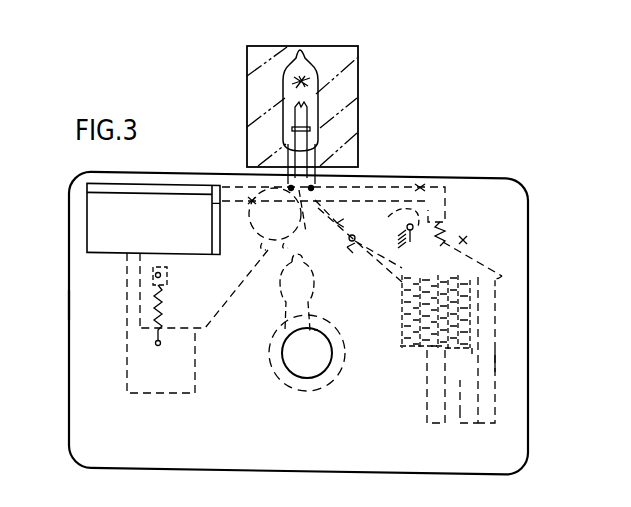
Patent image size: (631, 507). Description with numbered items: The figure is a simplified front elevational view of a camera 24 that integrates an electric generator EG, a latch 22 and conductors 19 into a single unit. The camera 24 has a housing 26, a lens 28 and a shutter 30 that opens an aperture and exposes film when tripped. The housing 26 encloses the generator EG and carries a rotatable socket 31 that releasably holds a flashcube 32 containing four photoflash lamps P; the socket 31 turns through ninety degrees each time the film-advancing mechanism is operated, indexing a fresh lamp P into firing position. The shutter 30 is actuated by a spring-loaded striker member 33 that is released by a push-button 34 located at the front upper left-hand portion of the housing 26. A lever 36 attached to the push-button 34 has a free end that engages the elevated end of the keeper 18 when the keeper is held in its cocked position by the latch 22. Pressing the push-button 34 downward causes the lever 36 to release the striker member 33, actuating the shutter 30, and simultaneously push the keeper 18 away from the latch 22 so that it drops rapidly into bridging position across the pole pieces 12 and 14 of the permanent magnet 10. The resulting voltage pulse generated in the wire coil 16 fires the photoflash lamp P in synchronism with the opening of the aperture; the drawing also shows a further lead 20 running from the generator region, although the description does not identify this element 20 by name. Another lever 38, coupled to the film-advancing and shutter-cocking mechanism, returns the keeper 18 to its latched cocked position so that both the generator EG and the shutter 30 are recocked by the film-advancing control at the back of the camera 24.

The permanent magnet 10 is at (461, 424).
The pole piece 12 is at (427, 397).
The pole piece 14 is at (497, 396).
The wire coil 16 is at (476, 318).
The keeper 18 is at (478, 233).
The conductors 19 is at (400, 289).
The lead wire 20 is at (498, 278).
The latch 22 is at (388, 217).
The camera 24 is at (32, 368).
The housing 26 is at (69, 303).
The lens 28 is at (307, 372).
The shutter 30 is at (283, 383).
The rotatable socket 31 is at (358, 173).
The flashcube 32 is at (358, 60).
The striker member 33 is at (252, 201).
The push-button 34 is at (87, 213).
The lever 36 is at (420, 178).
The lever 38 is at (389, 255).
The photoflash lamp P is at (283, 92).
The electric generator EG is at (495, 362).